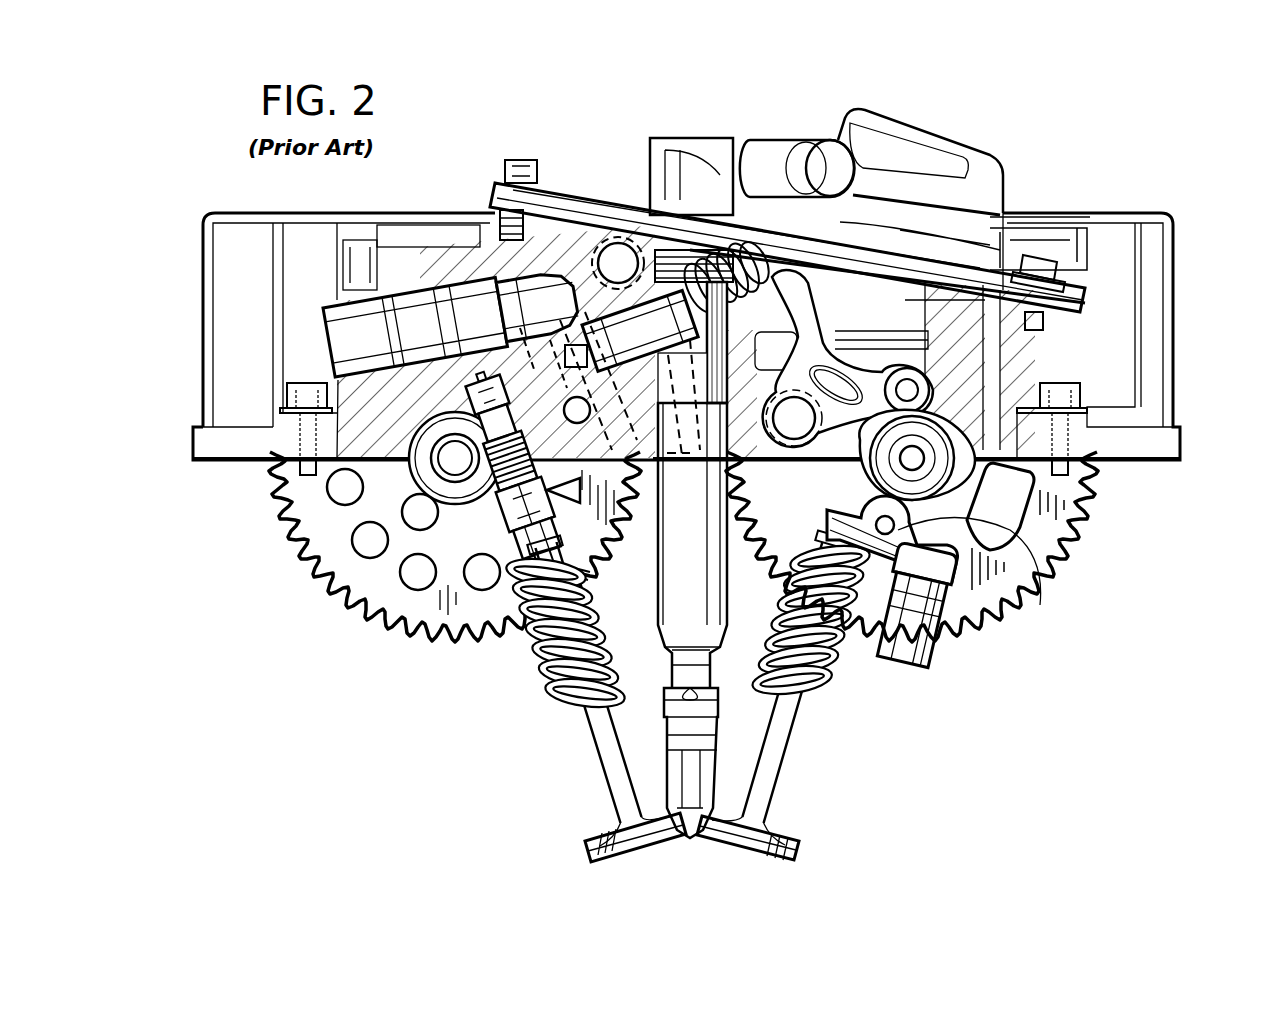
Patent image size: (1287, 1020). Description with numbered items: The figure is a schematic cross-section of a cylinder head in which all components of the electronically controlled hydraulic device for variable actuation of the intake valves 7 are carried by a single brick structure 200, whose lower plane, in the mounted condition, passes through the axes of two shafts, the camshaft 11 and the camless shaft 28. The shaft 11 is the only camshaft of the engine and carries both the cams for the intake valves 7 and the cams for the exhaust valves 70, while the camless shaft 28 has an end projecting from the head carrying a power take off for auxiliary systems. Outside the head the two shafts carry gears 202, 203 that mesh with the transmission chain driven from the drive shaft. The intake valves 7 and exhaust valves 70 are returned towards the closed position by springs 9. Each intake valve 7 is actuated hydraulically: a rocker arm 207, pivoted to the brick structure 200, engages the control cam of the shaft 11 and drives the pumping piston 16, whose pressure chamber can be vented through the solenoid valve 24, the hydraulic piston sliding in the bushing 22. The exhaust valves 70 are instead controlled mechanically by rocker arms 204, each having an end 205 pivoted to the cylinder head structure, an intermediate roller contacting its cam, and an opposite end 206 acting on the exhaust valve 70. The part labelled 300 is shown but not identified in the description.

The brick structure 200 is at (1190, 253).
The rocker shaft bracket 300 is at (597, 183).
The pumping piston 16 is at (742, 305).
The rocker arm 207 is at (842, 333).
The camshaft 11 is at (978, 428).
The gear 203 is at (375, 588).
The camless shaft 28 is at (400, 488).
The solenoid valve 24 is at (385, 325).
The bushing 22 is at (490, 515).
The springs 9 is at (540, 680).
The intake valves 7 is at (600, 785).
The exhaust valves 70 is at (785, 785).
The opposite end 206 is at (840, 535).
The end 205 is at (975, 628).
The gear 202 is at (1065, 520).
The rocker arms 204 is at (1050, 575).